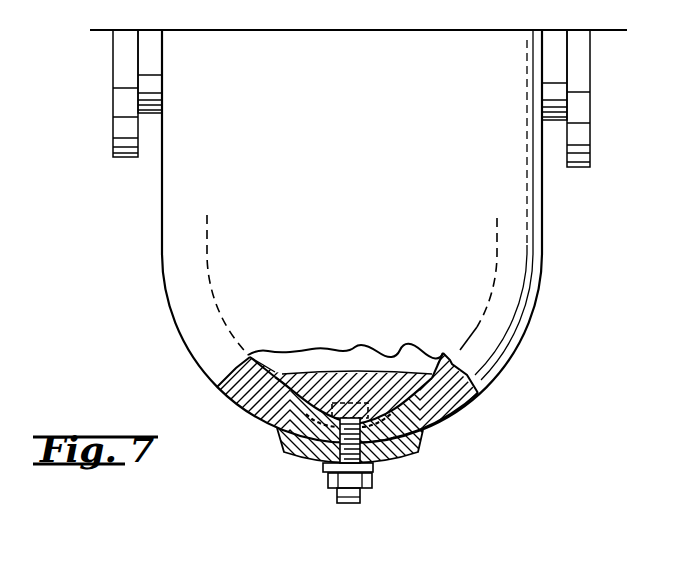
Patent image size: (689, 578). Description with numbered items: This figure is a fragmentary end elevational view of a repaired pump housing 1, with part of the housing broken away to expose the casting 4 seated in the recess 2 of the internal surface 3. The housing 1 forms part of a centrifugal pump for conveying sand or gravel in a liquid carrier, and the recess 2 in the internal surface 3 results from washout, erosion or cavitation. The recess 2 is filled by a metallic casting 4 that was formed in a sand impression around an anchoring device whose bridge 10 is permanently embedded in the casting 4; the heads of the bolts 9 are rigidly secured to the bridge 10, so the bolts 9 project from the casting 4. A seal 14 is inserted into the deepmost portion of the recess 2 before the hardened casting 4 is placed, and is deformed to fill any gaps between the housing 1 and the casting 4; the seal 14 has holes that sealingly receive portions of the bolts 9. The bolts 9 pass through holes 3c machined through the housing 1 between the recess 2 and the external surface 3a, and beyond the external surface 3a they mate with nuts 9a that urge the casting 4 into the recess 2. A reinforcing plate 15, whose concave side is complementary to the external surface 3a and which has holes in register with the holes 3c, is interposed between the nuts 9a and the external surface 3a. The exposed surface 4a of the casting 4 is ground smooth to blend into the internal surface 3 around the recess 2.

The housing 1 is at (575, 222).
The recess 2 is at (298, 402).
The internal surface 3 is at (287, 378).
The external surface 3a is at (468, 418).
The holes 3c is at (382, 466).
The casting 4 is at (392, 387).
The exposed surface 4a is at (313, 400).
The bolts 9 is at (342, 493).
The nuts 9a is at (370, 487).
The bridge 10 is at (357, 403).
The seal 14 is at (423, 430).
The reinforcing plate 15 is at (403, 448).